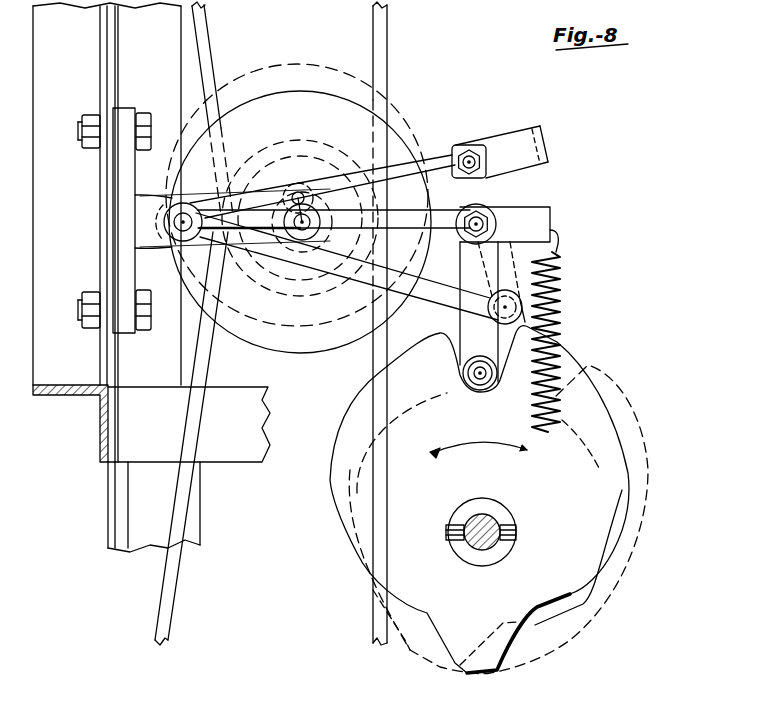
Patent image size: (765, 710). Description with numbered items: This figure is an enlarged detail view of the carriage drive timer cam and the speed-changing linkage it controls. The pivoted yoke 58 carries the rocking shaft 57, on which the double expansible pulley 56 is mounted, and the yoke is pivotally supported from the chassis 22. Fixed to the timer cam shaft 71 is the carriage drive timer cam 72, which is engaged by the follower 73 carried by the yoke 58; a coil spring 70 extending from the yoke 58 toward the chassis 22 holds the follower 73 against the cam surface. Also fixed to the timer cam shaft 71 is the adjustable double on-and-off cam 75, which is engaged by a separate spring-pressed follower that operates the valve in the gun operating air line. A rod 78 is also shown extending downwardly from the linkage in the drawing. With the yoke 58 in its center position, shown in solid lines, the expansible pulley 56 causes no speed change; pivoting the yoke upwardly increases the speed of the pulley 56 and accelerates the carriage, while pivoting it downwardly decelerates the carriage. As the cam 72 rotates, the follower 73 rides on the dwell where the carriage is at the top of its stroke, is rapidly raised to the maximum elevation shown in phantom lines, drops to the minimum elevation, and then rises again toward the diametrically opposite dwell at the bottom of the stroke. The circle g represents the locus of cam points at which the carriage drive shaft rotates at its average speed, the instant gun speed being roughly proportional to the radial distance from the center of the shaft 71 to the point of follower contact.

The chassis 22 is at (107, 506).
The double expansible pulley 56 is at (404, 130).
The rocking shaft 57 is at (308, 186).
The pivoted yoke 58 is at (420, 150).
The spring 70 is at (560, 282).
The timer cam shaft 71 is at (494, 548).
The carriage drive timer cam 72 is at (600, 420).
The follower 73 is at (523, 305).
The adjustable double "on" and "off" cam 75 is at (254, 356).
The rod 78 is at (233, 697).
The circle g is at (603, 603).